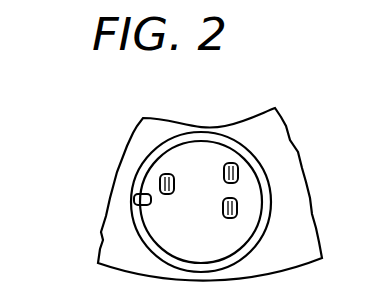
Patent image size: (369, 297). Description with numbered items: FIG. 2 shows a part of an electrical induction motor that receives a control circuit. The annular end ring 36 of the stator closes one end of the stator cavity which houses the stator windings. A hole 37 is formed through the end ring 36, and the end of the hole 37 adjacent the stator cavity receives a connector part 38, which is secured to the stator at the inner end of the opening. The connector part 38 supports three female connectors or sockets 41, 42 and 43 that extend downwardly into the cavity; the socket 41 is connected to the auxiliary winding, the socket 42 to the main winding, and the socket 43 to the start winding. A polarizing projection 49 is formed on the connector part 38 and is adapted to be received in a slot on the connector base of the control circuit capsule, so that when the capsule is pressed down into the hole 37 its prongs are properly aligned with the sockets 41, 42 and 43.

The annular end ring 36 is at (137, 135).
The hole 37 is at (264, 229).
The connector part 38 is at (221, 256).
The socket 41 is at (238, 172).
The socket 42 is at (238, 207).
The socket 43 is at (160, 183).
The polarizing projection 49 is at (143, 199).